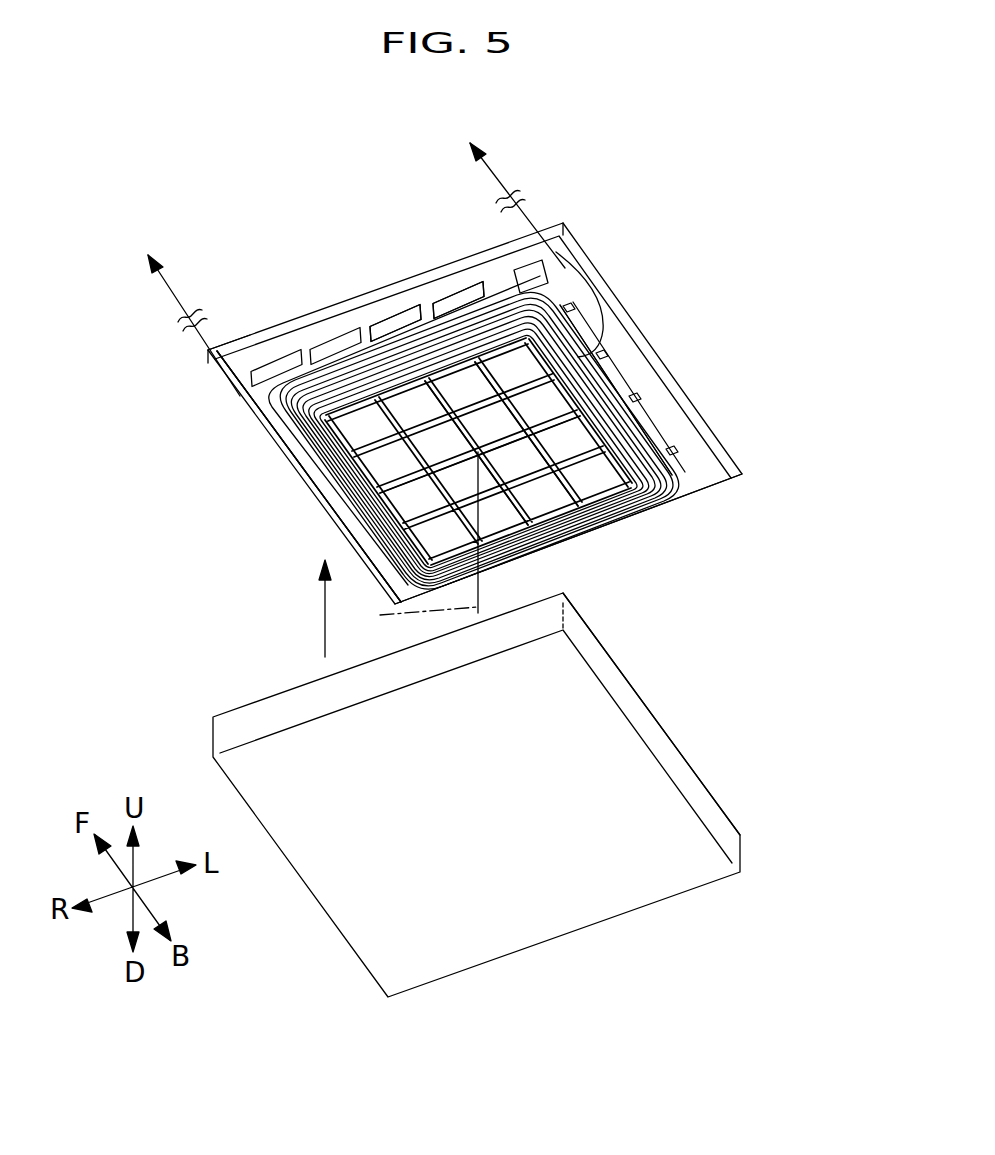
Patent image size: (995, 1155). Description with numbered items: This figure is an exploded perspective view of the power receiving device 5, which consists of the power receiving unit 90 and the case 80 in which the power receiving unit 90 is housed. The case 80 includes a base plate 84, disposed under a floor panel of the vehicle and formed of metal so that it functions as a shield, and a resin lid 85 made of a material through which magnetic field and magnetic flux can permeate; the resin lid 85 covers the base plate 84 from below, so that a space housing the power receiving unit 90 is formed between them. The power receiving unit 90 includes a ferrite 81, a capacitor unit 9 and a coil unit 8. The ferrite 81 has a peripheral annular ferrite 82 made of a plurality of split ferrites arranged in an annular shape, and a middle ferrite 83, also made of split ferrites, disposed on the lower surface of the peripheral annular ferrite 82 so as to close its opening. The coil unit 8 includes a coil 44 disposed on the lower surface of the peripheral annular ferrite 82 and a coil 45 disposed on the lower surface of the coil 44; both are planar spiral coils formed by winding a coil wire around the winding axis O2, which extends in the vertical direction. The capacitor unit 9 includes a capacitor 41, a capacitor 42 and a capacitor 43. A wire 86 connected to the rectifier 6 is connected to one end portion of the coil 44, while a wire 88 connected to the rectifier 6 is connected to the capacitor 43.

The power receiving device 5 is at (282, 256).
The rectifier 6 is at (349, 255).
The coil unit 8 is at (397, 190).
The capacitor unit 9 is at (762, 320).
The capacitor 41 is at (478, 437).
The capacitor 42 is at (500, 460).
The capacitor 43 is at (528, 470).
The coil 44 is at (373, 325).
The coil 45 is at (427, 333).
The case 80 is at (802, 505).
The ferrite 81 is at (650, 417).
The peripheral annular ferrite 82 is at (255, 400).
The middle ferrite 83 is at (300, 452).
The base plate 84 is at (713, 485).
The resin lid 85 is at (662, 723).
The wire 86 is at (203, 336).
The wire 88 is at (556, 262).
The power receiving unit 90 is at (795, 318).
The winding axis O2 is at (410, 541).